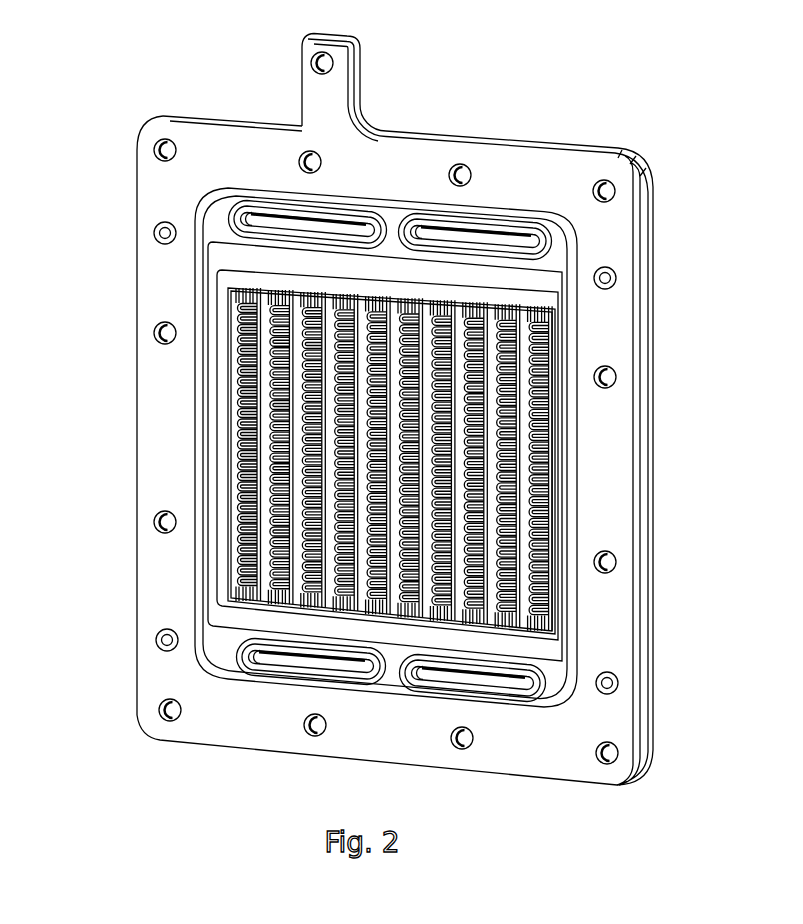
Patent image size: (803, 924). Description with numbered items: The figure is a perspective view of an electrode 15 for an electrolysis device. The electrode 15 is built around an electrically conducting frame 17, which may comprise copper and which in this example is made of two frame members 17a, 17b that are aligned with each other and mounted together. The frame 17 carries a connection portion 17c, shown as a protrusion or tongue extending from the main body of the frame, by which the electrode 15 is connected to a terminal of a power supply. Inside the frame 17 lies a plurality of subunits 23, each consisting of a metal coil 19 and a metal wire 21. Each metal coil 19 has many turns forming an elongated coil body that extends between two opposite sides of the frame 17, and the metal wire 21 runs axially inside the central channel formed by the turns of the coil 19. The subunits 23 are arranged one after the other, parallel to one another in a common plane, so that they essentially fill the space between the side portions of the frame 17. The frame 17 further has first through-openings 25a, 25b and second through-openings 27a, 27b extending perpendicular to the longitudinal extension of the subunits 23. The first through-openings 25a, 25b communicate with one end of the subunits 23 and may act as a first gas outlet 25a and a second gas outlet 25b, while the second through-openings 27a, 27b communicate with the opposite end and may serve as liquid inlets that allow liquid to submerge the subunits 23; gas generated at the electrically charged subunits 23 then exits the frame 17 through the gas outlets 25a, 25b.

The electrode 15 is at (587, 44).
The electrically conducting frame 17 is at (162, 112).
The frame member 17a is at (137, 148).
The frame member 17b is at (205, 108).
The connection portion 17c is at (302, 52).
The metal coil 19 is at (265, 288).
The metal wire 21 is at (287, 290).
The subunit 23 is at (234, 402).
The first gas outlet 25a is at (347, 226).
The second gas outlet 25b is at (483, 230).
The second through-opening 27a is at (352, 669).
The second through-opening 27b is at (440, 676).